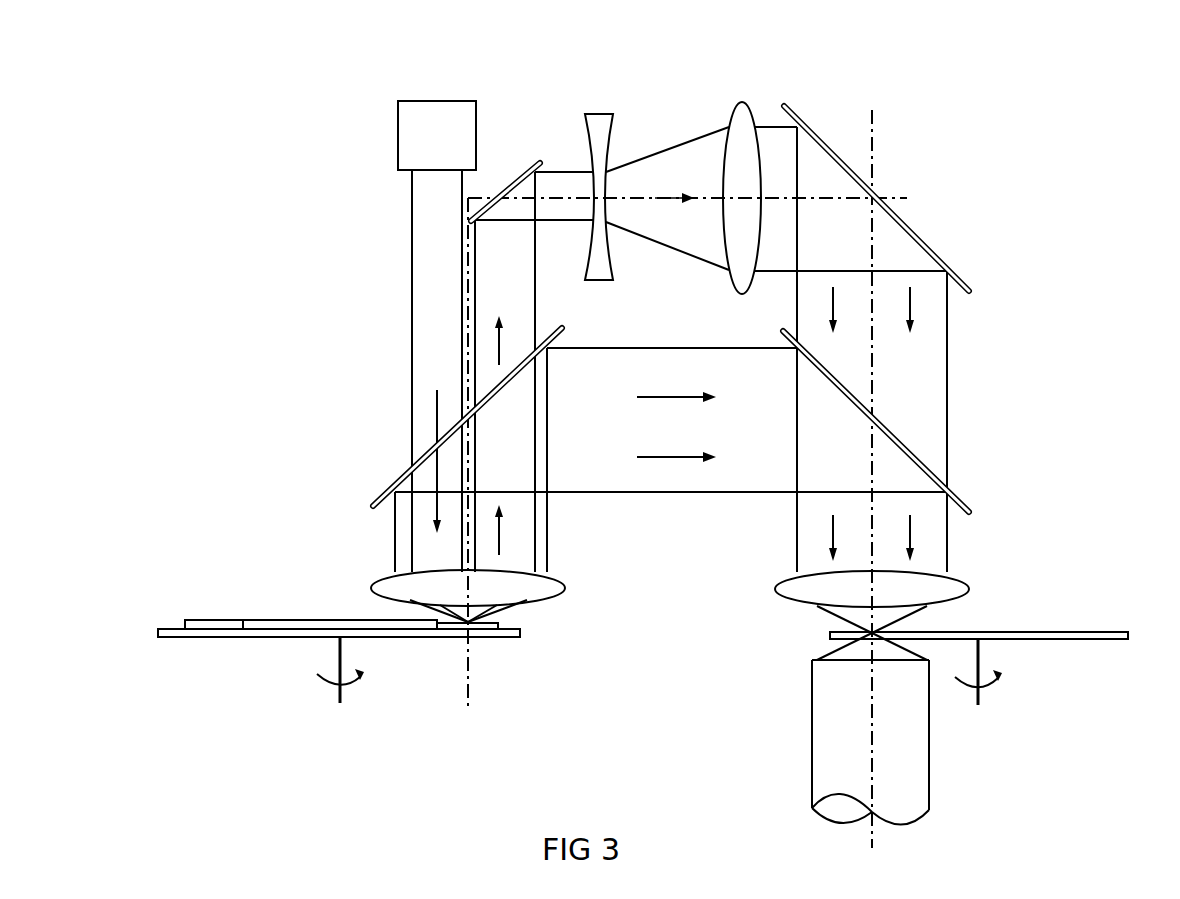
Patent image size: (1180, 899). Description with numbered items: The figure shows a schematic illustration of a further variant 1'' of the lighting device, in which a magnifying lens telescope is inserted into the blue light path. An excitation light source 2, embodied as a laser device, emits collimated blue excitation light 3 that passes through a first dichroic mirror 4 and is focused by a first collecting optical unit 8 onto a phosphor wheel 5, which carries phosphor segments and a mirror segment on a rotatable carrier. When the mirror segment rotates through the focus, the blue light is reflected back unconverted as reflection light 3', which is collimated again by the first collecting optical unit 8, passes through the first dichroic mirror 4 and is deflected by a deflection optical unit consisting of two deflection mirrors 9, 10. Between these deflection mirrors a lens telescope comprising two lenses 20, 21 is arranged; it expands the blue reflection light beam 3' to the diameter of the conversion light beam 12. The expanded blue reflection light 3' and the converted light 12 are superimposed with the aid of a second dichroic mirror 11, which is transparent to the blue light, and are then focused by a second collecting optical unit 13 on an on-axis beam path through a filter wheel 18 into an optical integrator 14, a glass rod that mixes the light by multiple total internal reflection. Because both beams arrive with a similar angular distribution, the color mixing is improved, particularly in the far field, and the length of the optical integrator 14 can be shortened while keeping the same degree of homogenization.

The lighting device variant 1'' is at (743, 445).
The excitation light source 2 is at (398, 134).
The excitation light 3 is at (397, 371).
The reflection light 3' is at (740, 349).
The first dichroic mirror 4 is at (378, 498).
The phosphor wheel 5 is at (140, 632).
The first collecting optical unit 8 is at (566, 588).
The first deflection mirror 9 is at (511, 182).
The second deflection mirror 10 is at (966, 279).
The second dichroic mirror 11 is at (968, 506).
The conversion light beam 12 is at (721, 485).
The second collecting optical unit 13 is at (968, 590).
The optical integrator 14 is at (915, 759).
The filter wheel 18 is at (1100, 631).
The first telescope lens 20 is at (601, 122).
The second telescope lens 21 is at (742, 103).